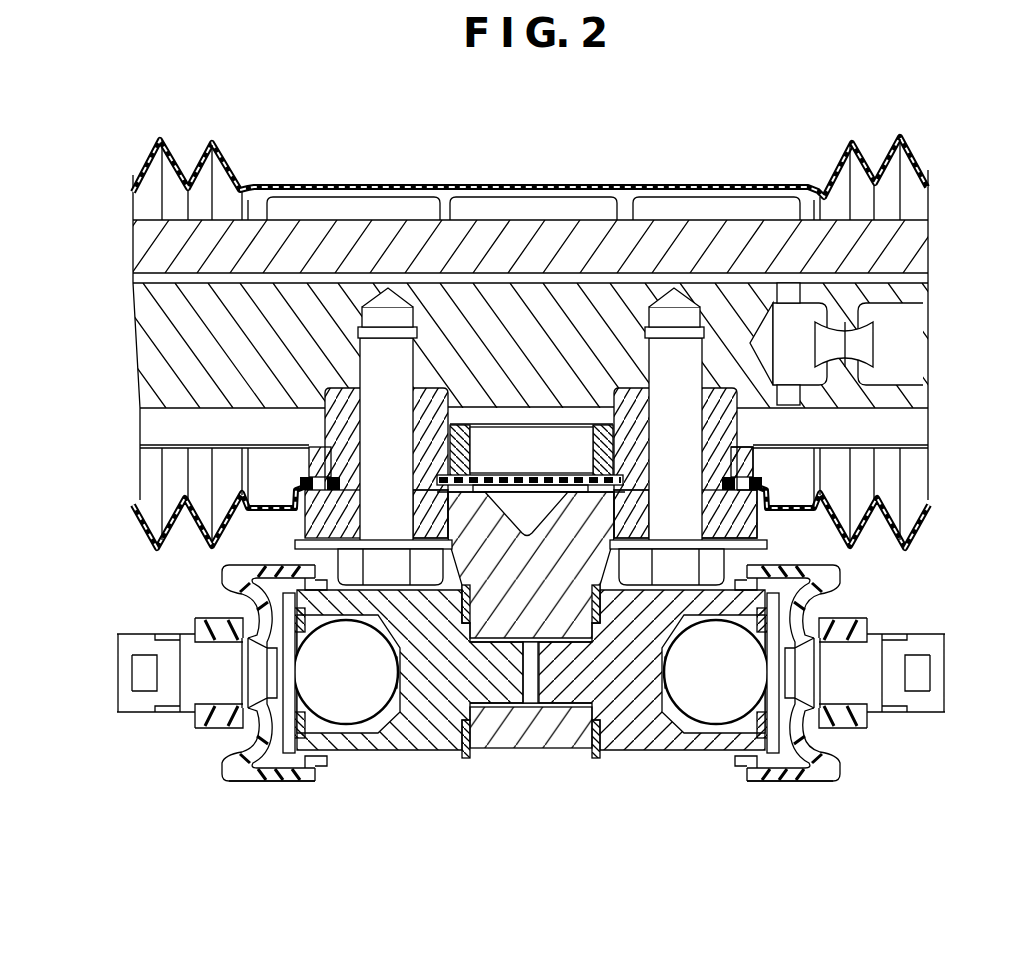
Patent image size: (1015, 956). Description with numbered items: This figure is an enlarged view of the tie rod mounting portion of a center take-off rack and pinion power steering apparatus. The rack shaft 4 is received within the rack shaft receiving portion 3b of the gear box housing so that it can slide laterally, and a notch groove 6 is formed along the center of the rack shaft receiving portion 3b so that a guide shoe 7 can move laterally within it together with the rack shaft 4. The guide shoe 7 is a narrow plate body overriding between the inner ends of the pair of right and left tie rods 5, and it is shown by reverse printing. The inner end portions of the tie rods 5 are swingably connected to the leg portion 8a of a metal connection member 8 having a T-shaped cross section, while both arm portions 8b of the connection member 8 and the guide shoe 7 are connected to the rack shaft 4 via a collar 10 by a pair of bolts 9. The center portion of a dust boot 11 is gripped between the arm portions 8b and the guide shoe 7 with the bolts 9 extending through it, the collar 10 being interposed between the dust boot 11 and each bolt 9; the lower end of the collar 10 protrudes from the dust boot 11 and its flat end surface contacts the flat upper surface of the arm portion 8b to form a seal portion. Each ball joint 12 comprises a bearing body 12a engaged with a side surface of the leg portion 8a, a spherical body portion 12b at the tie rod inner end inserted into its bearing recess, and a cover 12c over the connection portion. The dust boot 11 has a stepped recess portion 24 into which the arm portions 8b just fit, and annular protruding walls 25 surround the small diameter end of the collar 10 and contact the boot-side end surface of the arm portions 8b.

The rack shaft receiving portion 3b is at (573, 235).
The rack shaft 4 is at (160, 352).
The tie rod 5 is at (118, 715).
The notch groove 6 is at (160, 428).
The guide shoe 7 is at (485, 437).
The connection member 8 is at (513, 758).
The leg portion 8a is at (545, 740).
The arm portion 8b is at (318, 519).
The bolt 9 is at (386, 360).
The collar 10 is at (348, 385).
The dust boot 11 is at (900, 135).
The ball joint 12 is at (283, 790).
The bearing body 12a is at (422, 740).
The spherical body portion 12b is at (347, 712).
The cover 12c is at (232, 783).
The stepped recess portion 24 is at (740, 522).
The annular protruding wall 25 is at (432, 503).